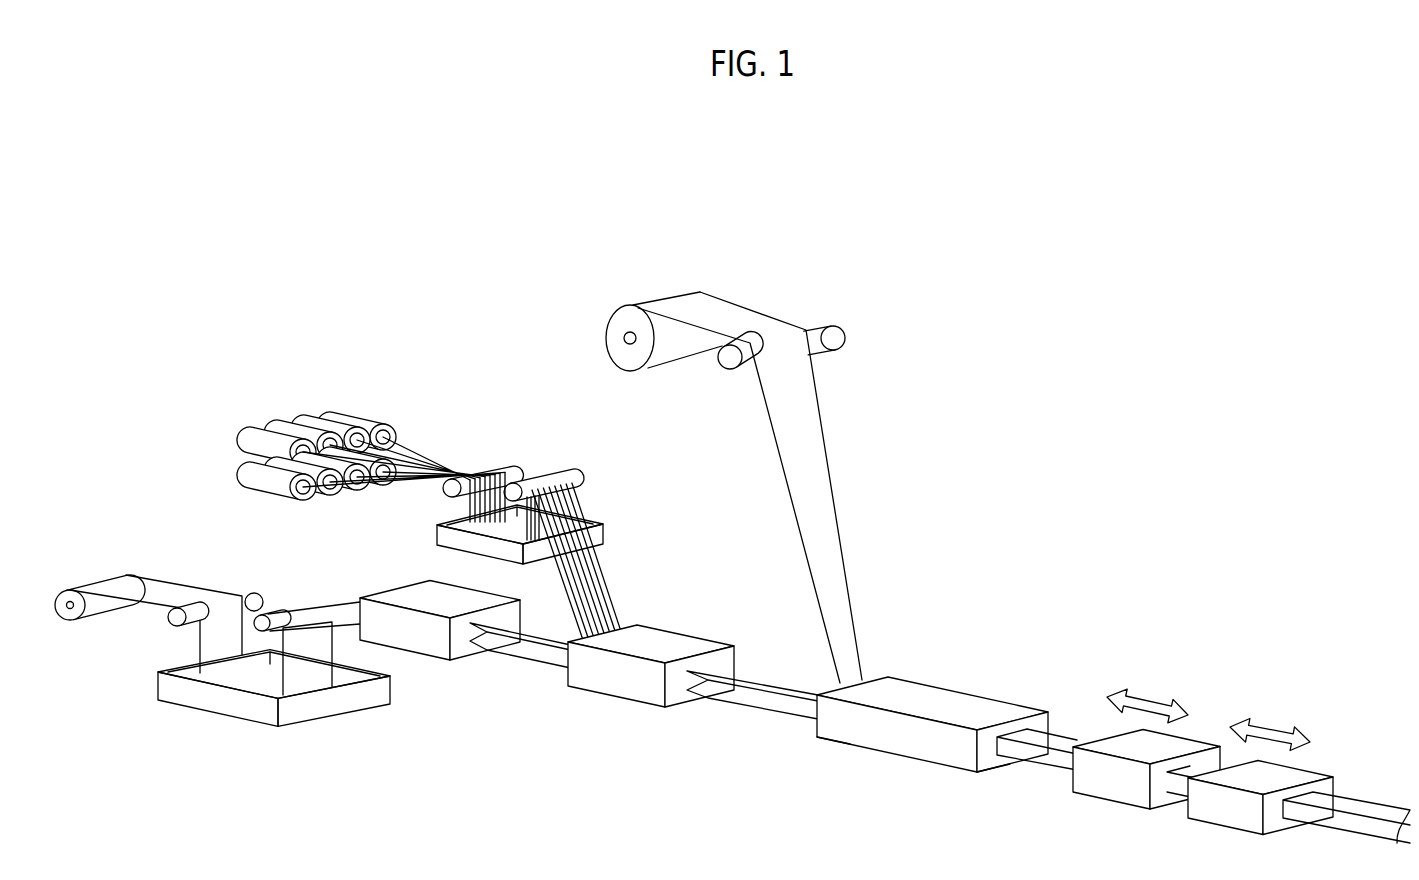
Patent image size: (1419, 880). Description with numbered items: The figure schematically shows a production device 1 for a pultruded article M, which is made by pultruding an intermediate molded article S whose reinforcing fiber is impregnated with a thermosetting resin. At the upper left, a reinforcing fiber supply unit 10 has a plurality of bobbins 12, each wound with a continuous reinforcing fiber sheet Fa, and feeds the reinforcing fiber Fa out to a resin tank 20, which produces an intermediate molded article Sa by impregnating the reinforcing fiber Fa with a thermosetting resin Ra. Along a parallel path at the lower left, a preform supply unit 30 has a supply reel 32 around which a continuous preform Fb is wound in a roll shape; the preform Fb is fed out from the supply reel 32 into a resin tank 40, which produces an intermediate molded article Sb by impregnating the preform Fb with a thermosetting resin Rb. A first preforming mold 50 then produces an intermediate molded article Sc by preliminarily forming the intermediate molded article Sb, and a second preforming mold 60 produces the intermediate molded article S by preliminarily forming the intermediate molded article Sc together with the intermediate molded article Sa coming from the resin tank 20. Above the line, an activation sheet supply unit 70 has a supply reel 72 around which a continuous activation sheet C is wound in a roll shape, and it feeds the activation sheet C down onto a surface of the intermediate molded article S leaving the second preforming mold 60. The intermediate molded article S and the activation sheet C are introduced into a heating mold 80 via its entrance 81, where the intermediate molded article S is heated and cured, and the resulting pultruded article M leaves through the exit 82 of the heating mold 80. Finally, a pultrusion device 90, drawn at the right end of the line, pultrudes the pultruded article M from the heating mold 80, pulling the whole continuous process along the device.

The production device 1 is at (1126, 364).
The reinforcing fiber supply unit 10 is at (279, 454).
The bobbin 12 is at (327, 432).
The reinforcing fiber Fa is at (462, 470).
The resin tank 20 is at (493, 503).
The thermosetting resin Ra is at (536, 548).
The intermediate molded article Sa is at (598, 590).
The preform supply unit 30 is at (151, 588).
The supply reel 32 is at (68, 622).
The preform Fb is at (173, 586).
The resin tank 40 is at (270, 707).
The thermosetting resin Rb is at (258, 690).
The intermediate molded article Sb is at (326, 605).
The first preforming mold 50 is at (414, 585).
The intermediate molded article Sc is at (522, 660).
The second preforming mold 60 is at (686, 621).
The intermediate molded article S is at (769, 716).
The activation sheet supply unit 70 is at (712, 441).
The supply reel 72 is at (622, 338).
The activation sheet C is at (826, 502).
The heating mold 80 is at (919, 716).
The entrance 81 is at (817, 740).
The exit 82 is at (1000, 766).
The pultruded article M is at (1050, 780).
The pultrusion device 90 is at (1209, 720).